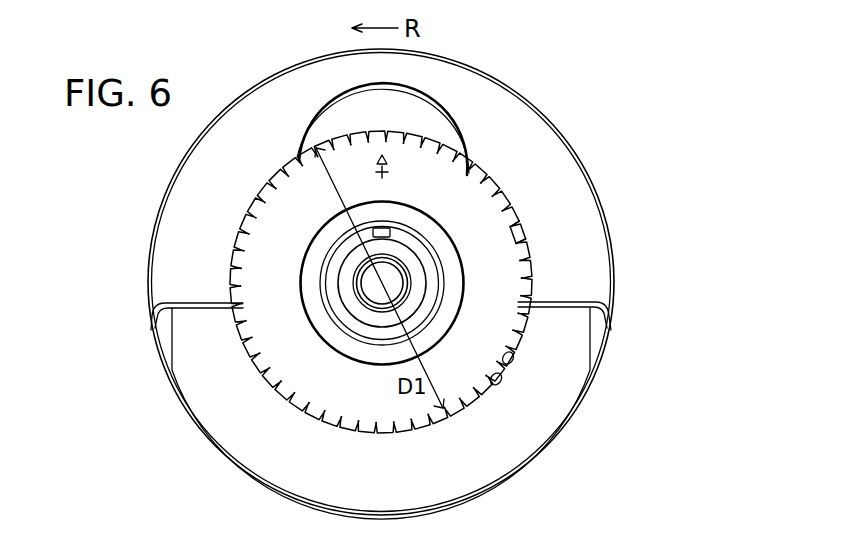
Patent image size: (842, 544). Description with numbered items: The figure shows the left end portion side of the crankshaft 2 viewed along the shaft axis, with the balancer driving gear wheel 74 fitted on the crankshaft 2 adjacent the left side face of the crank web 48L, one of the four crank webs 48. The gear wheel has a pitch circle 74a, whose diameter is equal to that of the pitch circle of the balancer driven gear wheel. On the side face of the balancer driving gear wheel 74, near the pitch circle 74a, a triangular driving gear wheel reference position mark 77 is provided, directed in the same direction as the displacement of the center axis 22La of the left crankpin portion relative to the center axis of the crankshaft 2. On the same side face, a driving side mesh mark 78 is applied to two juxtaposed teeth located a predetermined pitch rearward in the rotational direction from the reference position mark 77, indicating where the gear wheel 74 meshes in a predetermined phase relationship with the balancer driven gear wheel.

The crankshaft 2 is at (464, 276).
The center axis of the crankpin portion 22La is at (384, 174).
The crank webs 48 is at (573, 147).
The left crank web 48L is at (517, 427).
The balancer driving gear wheel 74 is at (494, 205).
The pitch circle 74a is at (520, 237).
The driving gear wheel reference position mark 77 is at (387, 157).
The driving side mesh mark 78 is at (500, 382).